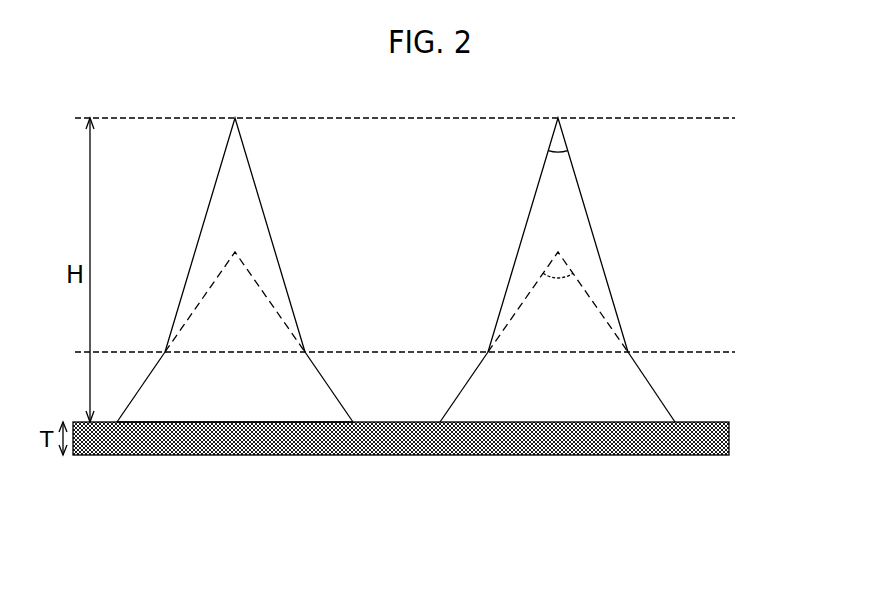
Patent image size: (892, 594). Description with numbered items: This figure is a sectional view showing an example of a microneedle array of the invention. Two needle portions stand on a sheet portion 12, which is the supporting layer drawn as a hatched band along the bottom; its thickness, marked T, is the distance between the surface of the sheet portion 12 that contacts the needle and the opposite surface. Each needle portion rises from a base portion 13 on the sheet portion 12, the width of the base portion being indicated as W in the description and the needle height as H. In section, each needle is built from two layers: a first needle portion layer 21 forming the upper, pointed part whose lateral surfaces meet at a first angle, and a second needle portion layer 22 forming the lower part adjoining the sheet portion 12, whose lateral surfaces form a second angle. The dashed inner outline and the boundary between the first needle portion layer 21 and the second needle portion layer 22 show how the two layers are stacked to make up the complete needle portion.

The sheet portion 12 is at (729, 434).
The base portion 13 is at (345, 410).
The first needle portion layer 21 is at (723, 118).
The second needle portion layer 22 is at (723, 352).